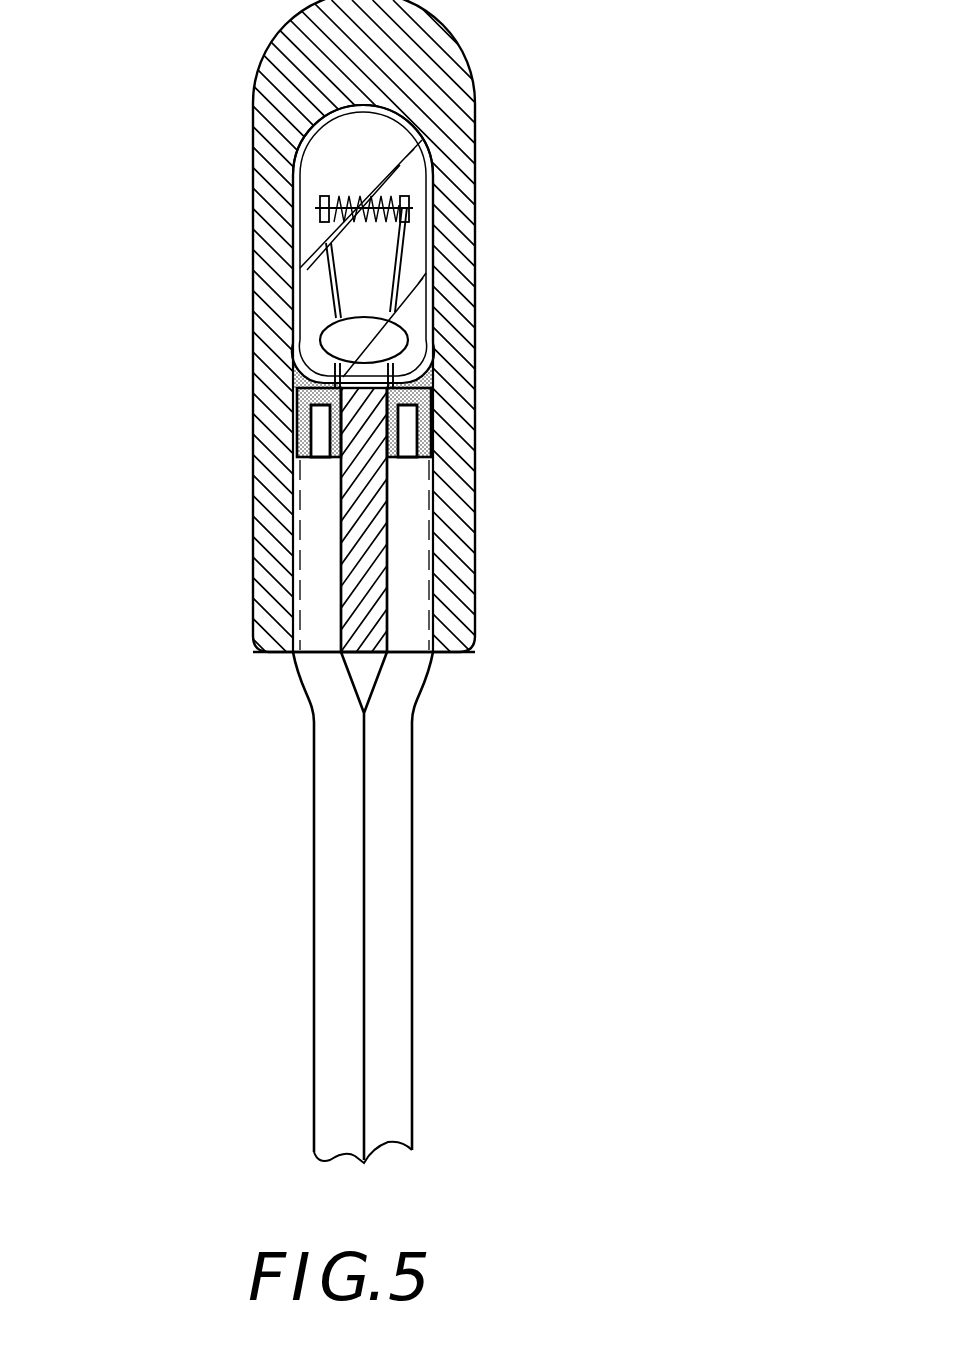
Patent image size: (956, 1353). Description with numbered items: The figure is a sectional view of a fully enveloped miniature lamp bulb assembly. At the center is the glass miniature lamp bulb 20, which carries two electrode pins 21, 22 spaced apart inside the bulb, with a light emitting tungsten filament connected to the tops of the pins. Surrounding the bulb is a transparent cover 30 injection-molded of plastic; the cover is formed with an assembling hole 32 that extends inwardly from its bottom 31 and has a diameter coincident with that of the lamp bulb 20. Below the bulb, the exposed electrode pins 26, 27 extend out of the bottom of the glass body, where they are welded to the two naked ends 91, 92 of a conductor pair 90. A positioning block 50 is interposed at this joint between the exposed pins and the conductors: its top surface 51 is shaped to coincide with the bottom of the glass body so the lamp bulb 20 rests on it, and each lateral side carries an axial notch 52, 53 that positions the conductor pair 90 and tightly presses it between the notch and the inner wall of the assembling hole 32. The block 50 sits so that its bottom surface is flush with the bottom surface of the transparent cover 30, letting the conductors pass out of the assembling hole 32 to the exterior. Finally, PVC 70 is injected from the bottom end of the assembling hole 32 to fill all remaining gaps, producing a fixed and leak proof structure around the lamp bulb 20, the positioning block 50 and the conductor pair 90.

The transparent cover 30 is at (415, 67).
The bottom 31 is at (437, 651).
The miniature lamp bulb 20 is at (407, 222).
The electrode pin 21 is at (325, 281).
The electrode pin 22 is at (400, 267).
The assembling hole 32 is at (445, 361).
The exposed electrode pin 26 is at (293, 420).
The exposed electrode pin 27 is at (433, 420).
The naked end 91 is at (320, 443).
The naked end 92 is at (412, 441).
The positioning block 50 is at (370, 592).
The top surface 51 is at (340, 464).
The axial notch 52 is at (345, 545).
The axial notch 53 is at (376, 508).
The PVC 70 is at (297, 386).
The conductor pair 90 is at (400, 822).